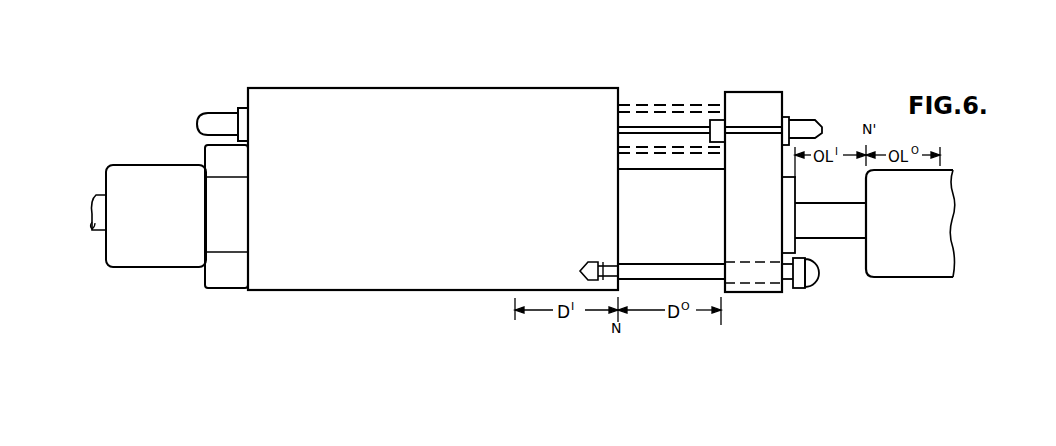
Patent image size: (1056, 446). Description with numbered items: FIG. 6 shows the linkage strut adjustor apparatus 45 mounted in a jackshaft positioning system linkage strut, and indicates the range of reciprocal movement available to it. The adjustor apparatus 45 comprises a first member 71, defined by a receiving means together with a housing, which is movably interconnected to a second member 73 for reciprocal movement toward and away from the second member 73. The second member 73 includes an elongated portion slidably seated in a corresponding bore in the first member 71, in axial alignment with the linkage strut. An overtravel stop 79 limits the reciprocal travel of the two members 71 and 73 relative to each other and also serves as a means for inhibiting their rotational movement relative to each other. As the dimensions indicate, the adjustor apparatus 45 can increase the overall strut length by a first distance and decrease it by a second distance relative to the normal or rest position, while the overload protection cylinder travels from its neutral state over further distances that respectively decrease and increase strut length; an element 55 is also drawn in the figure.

The linkage strut adjustor apparatus 45 is at (362, 293).
The first member 71 is at (510, 100).
The second member 73 is at (745, 105).
The rod 55 is at (808, 134).
The overtravel stop 79 is at (800, 298).